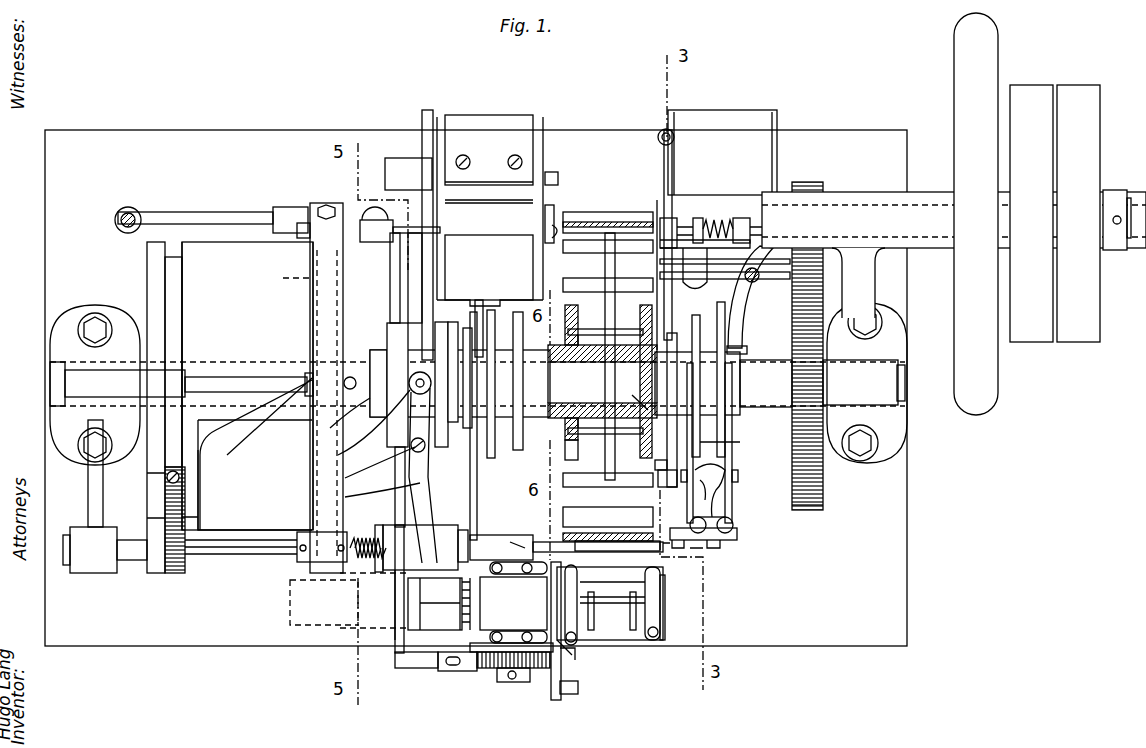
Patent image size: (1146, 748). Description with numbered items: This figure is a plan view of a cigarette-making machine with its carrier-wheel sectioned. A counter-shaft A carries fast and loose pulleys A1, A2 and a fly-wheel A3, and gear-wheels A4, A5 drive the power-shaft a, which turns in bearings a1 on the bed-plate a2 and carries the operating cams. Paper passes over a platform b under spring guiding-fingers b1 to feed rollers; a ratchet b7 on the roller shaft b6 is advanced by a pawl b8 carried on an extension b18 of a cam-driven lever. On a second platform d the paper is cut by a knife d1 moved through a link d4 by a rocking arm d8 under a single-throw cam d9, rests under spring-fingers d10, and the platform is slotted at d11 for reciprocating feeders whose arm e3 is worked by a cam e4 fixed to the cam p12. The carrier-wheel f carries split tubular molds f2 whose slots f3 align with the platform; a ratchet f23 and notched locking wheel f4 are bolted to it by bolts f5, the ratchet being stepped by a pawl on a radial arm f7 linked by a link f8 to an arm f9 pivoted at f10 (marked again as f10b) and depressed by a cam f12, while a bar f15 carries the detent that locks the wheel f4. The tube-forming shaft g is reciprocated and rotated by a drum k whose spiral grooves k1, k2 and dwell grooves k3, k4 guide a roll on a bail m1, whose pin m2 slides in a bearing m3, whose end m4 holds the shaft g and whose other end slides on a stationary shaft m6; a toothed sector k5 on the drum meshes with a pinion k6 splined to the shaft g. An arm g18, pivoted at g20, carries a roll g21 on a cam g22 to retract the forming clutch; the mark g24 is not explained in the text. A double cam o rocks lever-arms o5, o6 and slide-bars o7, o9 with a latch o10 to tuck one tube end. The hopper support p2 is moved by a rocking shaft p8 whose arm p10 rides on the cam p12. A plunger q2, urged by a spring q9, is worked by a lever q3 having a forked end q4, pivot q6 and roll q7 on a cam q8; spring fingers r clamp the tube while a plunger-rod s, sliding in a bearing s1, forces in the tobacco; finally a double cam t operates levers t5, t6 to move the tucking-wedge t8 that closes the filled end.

The frame a2 is at (212, 130).
The main shaft a is at (65, 383).
The shaft bearing a1 is at (70, 350).
The connecting rod k5 is at (165, 497).
The gear wheel k6 is at (175, 573).
The slide bar k is at (207, 235).
The slide plate k2 is at (247, 386).
The plate m3 is at (192, 372).
The plate m2 is at (272, 375).
The bracket k3 is at (218, 485).
The plate m1 is at (312, 512).
The lever k1 is at (270, 420).
The hidden lever k4 is at (283, 273).
The lever rod m6 is at (160, 218).
The standard m4 is at (325, 562).
The rod g is at (225, 560).
The plate g22 is at (387, 348).
The bar p12 is at (425, 335).
The bar f10 is at (393, 290).
The bar p10 is at (427, 175).
The block p8 is at (385, 172).
The block s1 is at (380, 242).
The rod s is at (432, 230).
The head block p2 is at (484, 125).
The screw r is at (550, 172).
The bracket t8 is at (557, 222).
The bar e4 is at (455, 322).
The bar t5 is at (470, 330).
The bar t6 is at (508, 312).
The bar t is at (495, 447).
The lever e3 is at (455, 470).
The spring d9 is at (460, 440).
The slide block d8 is at (477, 500).
The hidden part g24 is at (395, 588).
The hidden part f10b is at (395, 610).
The bar b is at (420, 652).
The teeth b1 is at (462, 618).
The box f3 is at (511, 607).
The bar b18 is at (420, 668).
The block b8 is at (455, 672).
The box b6 is at (500, 668).
The rack b7 is at (512, 670).
The frame d is at (610, 605).
The pins d11 is at (633, 608).
The post d10 is at (658, 601).
The bracket d1 is at (568, 657).
The bar d4 is at (551, 698).
The hub f is at (602, 382).
The flange f23 is at (640, 323).
The frame f2 is at (622, 212).
The pin f4 is at (580, 329).
The flange f5 is at (580, 430).
The hub part f7 is at (639, 396).
The rod f9 is at (664, 165).
The bar f12 is at (670, 335).
The block f8 is at (668, 487).
The block q2 is at (680, 228).
The spring q9 is at (715, 220).
The clevis q4 is at (772, 225).
The lever q3 is at (742, 310).
The pin q6 is at (754, 280).
The lever end q7 is at (746, 350).
The bar q8 is at (765, 410).
The frame o is at (717, 443).
The lug o5 is at (687, 490).
The cam o6 is at (732, 500).
The bar o7 is at (693, 522).
The rollers o9 is at (735, 528).
The bracket o10 is at (690, 550).
The gear A4 is at (808, 182).
The gear A5 is at (810, 512).
The drive shaft A is at (847, 205).
The fly wheel A3 is at (998, 400).
The pulley A1 is at (1024, 90).
The pulley A2 is at (1072, 90).
The lever g21 is at (337, 417).
The lever f15 is at (361, 427).
The lever g20 is at (362, 467).
The lever g18 is at (364, 494).